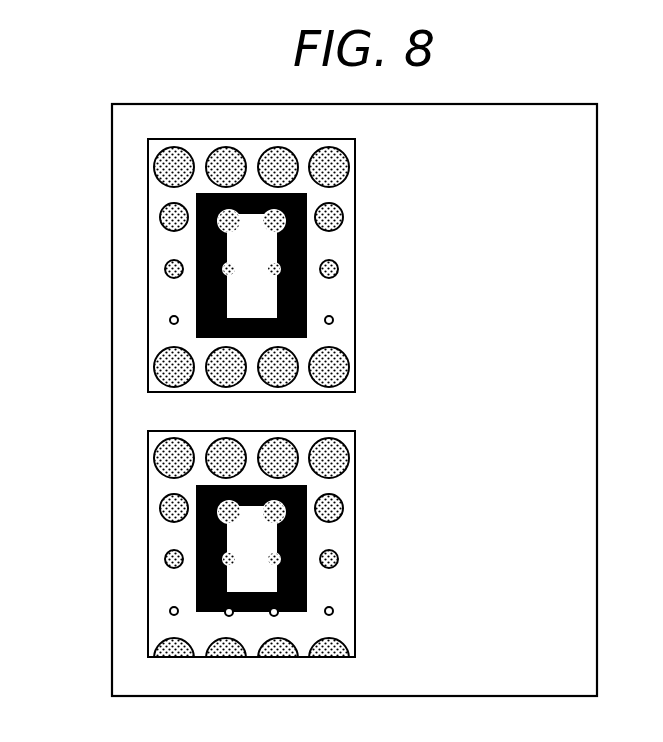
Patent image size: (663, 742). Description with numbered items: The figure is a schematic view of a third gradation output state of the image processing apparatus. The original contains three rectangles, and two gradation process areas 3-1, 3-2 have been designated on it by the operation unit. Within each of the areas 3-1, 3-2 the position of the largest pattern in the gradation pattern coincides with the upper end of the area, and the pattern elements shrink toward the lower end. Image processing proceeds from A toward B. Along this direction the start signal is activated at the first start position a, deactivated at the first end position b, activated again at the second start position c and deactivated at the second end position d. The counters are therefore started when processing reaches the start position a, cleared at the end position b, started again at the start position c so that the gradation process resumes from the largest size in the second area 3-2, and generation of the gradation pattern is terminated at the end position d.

The gradation process area 3-1 is at (148, 194).
The gradation process area 3-2 is at (148, 488).
The 1st start position a is at (360, 140).
The first end position b is at (360, 392).
The 2nd start position c is at (360, 432).
The 2nd end position d is at (360, 656).
The processing start point A is at (612, 106).
The processing end point B is at (612, 696).